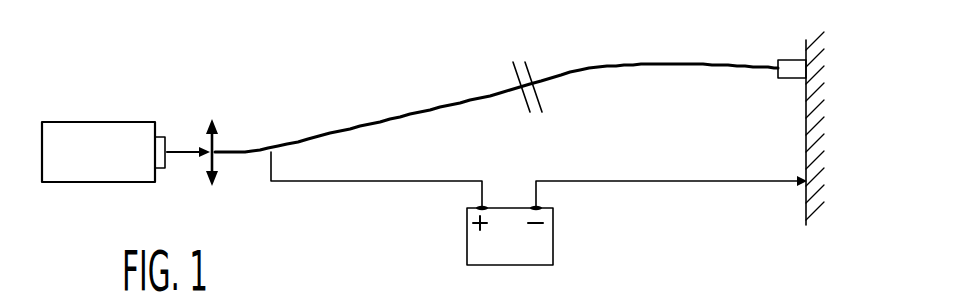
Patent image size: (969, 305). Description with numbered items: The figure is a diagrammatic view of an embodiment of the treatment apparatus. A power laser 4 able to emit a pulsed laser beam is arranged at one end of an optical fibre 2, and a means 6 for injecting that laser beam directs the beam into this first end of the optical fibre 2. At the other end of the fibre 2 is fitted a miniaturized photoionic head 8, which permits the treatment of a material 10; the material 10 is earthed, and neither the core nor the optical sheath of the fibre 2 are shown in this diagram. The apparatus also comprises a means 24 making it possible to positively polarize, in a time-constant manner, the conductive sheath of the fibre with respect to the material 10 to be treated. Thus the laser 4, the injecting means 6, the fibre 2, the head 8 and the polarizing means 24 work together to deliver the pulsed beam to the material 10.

The optical fibre 2 is at (592, 33).
The power laser 4 is at (111, 130).
The means for injecting the laser beam 6 is at (214, 143).
The miniaturized photoionic head 8 is at (785, 58).
The material 10 is at (812, 108).
The polarizing means 24 is at (550, 237).